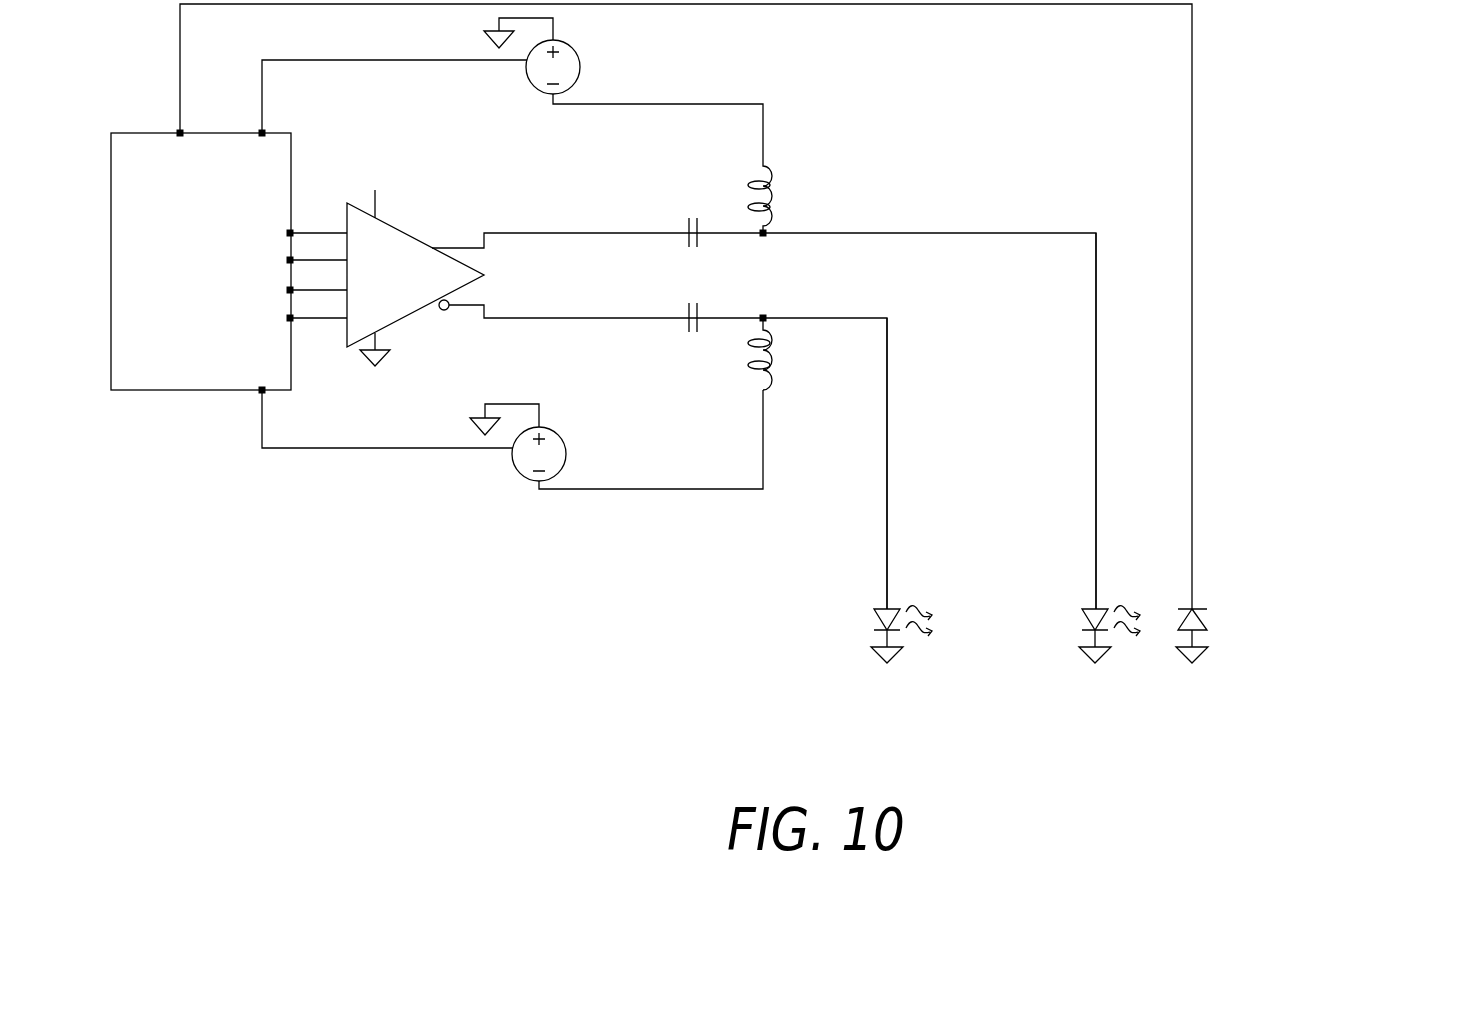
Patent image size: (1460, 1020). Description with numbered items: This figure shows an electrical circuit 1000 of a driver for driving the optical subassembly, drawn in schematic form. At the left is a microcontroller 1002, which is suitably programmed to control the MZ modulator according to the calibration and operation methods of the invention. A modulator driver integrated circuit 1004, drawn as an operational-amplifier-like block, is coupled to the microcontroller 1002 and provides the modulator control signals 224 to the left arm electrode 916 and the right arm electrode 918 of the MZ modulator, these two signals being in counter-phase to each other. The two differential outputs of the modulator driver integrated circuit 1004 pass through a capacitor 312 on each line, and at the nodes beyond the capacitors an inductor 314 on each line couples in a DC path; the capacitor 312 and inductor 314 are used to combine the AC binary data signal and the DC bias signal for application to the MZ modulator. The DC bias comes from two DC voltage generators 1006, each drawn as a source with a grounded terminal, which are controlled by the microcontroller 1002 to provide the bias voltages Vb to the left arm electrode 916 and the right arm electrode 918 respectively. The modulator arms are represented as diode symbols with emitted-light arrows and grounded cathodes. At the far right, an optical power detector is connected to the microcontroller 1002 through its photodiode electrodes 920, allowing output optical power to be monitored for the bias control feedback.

The electrical circuit of a driver 1000 is at (530, 614).
The microcontroller 1002 is at (235, 368).
The modulator driver integrated circuit 1004 is at (408, 305).
The DC voltage generator 1006 is at (582, 60).
The capacitor 312 is at (684, 307).
The inductor 314 is at (770, 210).
The modulator control signals 224 is at (886, 446).
The left arm electrode 916 is at (888, 656).
The right arm electrode 918 is at (1097, 653).
The photodiode electrodes 920 is at (1192, 652).